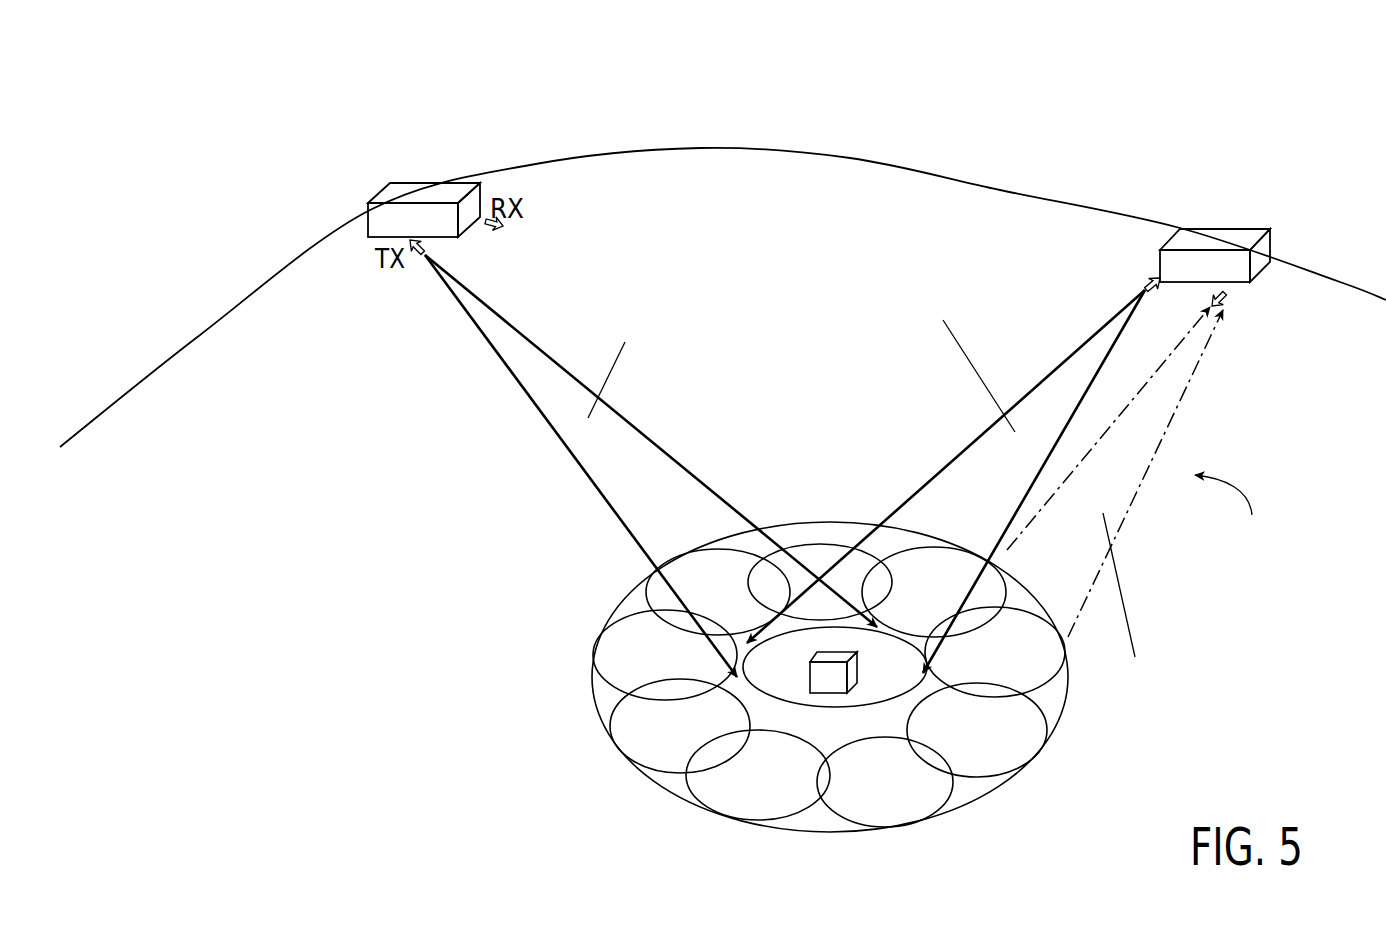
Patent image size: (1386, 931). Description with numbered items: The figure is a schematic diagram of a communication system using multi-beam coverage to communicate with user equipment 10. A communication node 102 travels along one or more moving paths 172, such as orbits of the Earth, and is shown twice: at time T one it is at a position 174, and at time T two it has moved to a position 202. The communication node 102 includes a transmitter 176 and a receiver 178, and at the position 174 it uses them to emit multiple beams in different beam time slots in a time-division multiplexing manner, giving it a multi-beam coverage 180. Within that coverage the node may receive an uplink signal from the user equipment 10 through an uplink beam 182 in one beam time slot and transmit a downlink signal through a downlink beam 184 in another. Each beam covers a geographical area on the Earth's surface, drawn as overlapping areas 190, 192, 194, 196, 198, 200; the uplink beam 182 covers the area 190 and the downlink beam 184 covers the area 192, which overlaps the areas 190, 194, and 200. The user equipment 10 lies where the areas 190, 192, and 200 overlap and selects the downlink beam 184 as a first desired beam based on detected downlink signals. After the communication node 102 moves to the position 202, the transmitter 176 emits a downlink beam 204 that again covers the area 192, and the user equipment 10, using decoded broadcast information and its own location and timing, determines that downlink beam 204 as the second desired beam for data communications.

The user equipment 10 is at (810, 675).
The communication node 102 is at (400, 183).
The moving paths 172 is at (858, 105).
The position 174 is at (1171, 142).
The transmitter 176 is at (1115, 257).
The receiver 178 is at (1257, 322).
The multi-beam coverage 180 is at (1290, 597).
The uplink beam 182 is at (1183, 397).
The downlink beam 184 is at (945, 463).
The area 190 is at (1013, 669).
The area 192 is at (908, 681).
The area 194 is at (698, 741).
The area 196 is at (777, 791).
The area 198 is at (902, 797).
The area 200 is at (997, 746).
The position 202 is at (686, 92).
The downlink beam 204 is at (648, 435).